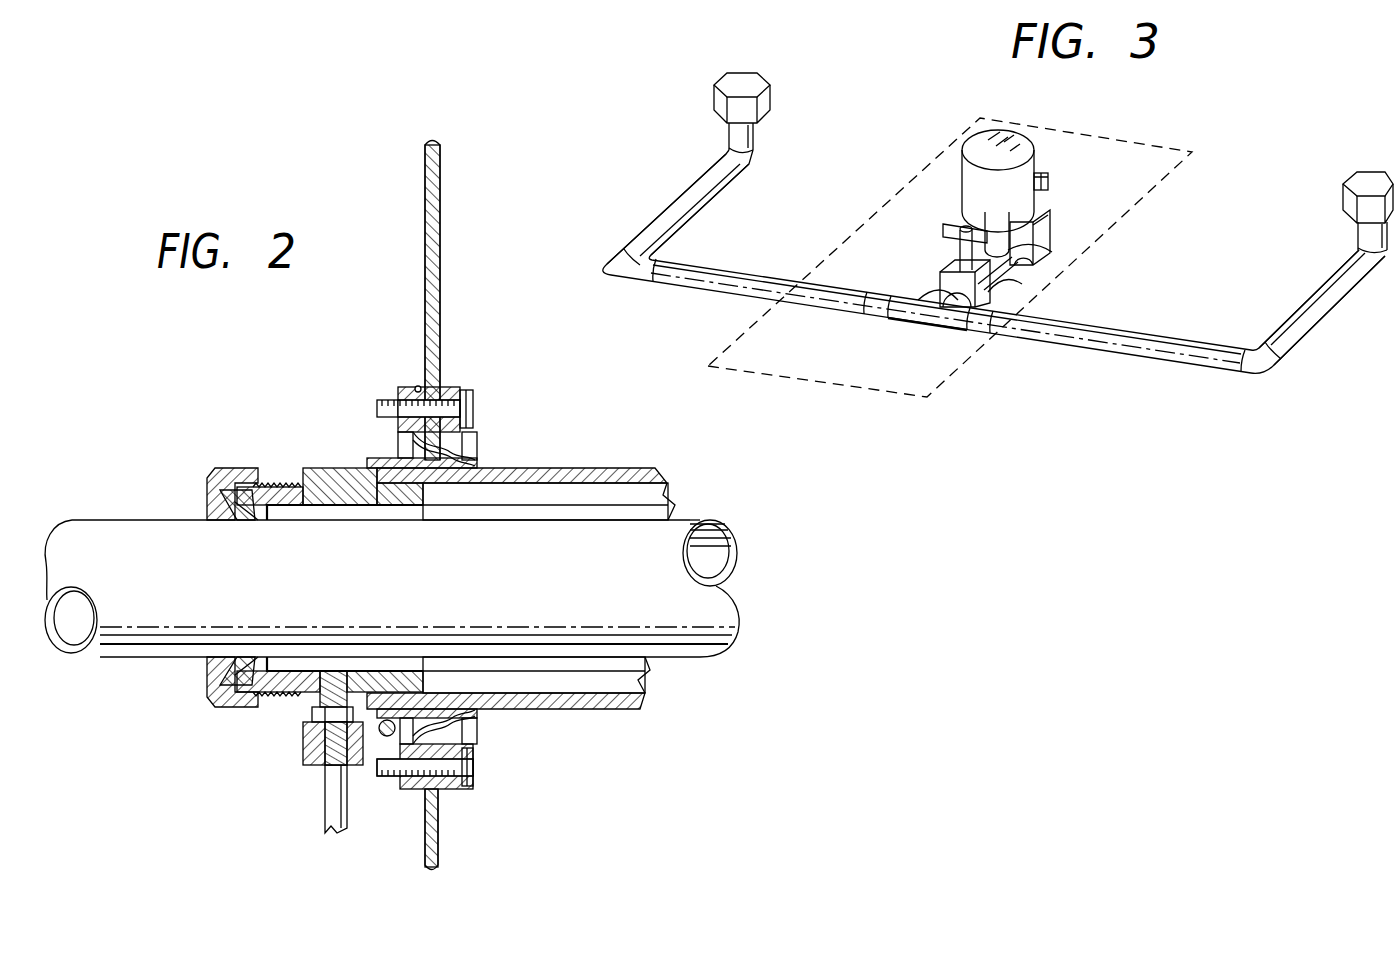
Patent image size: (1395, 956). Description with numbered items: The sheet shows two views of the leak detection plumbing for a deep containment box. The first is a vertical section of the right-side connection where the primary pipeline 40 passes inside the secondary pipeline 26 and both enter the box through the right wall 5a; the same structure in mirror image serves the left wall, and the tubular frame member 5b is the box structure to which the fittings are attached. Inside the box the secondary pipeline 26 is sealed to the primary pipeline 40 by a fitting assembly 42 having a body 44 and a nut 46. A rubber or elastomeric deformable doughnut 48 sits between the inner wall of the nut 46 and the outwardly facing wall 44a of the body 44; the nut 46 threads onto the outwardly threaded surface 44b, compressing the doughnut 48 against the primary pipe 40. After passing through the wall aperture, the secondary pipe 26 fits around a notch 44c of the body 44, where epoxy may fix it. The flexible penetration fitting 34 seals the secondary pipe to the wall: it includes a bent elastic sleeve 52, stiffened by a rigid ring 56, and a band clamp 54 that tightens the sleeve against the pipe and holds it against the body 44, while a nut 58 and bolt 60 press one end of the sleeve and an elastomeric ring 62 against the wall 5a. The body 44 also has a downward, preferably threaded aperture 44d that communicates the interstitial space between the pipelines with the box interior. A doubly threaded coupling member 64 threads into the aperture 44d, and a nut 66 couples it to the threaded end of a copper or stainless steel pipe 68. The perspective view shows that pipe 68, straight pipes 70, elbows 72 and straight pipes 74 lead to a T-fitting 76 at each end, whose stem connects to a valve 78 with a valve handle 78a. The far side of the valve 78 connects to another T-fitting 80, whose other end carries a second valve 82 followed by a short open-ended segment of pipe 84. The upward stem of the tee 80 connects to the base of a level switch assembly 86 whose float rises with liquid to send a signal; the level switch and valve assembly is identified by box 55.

In FIG. 2, the right wall 5a is at (440, 295).
In FIG. 2, the horizontal tubular frame member 5b is at (148, 540).
In FIG. 2, the secondary pipeline 26 is at (612, 467).
In FIG. 2, the penetration fitting 34 is at (470, 378).
In FIG. 2, the primary pipeline 40 is at (700, 522).
In FIG. 2, the fitting assembly 42 is at (280, 450).
In FIG. 2, the body 44 is at (320, 468).
In FIG. 2, the outwardly facing wall 44a is at (270, 507).
In FIG. 2, the outwardly threaded surface 44b is at (205, 700).
In FIG. 2, the notch 44c is at (378, 487).
In FIG. 2, the aperture 44d is at (345, 700).
In FIG. 2, the nut 46 is at (225, 465).
In FIG. 2, the deformable doughnut 48 is at (225, 500).
In FIG. 2, the elastic sleeve 52 is at (480, 457).
In FIG. 2, the band clamp 54 is at (390, 735).
In FIG. 2, the rigid ring 56 is at (395, 440).
In FIG. 2, the nut 58 is at (410, 385).
In FIG. 2, the bolt 60 is at (475, 412).
In FIG. 2, the elastomeric ring 62 is at (450, 387).
In FIG. 2, the doubly threaded coupling member 64 is at (305, 715).
In FIG. 2, the nut 66 is at (312, 768).
In FIG. 3, the nut 66 is at (770, 95).
In FIG. 2, the pipe 68 is at (325, 810).
In FIG. 3, the pipe 68 is at (755, 135).
In FIG. 3, the straight pipes 70 is at (706, 214).
In FIG. 3, the elbows 72 is at (614, 283).
In FIG. 3, the straight pipes 74 is at (712, 292).
In FIG. 3, the T-fitting 76 is at (922, 334).
In FIG. 3, the valve 78 is at (1012, 302).
In FIG. 3, the valve handle 78a is at (955, 243).
In FIG. 3, the T-fitting 80 is at (1000, 285).
In FIG. 3, the second valve 82 is at (1042, 245).
In FIG. 3, the open-ended segment of pipe 84 is at (1050, 185).
In FIG. 3, the level switch assembly 86 is at (1045, 150).
In FIG. 3, the level switch and valve assembly structure 55 is at (1152, 228).